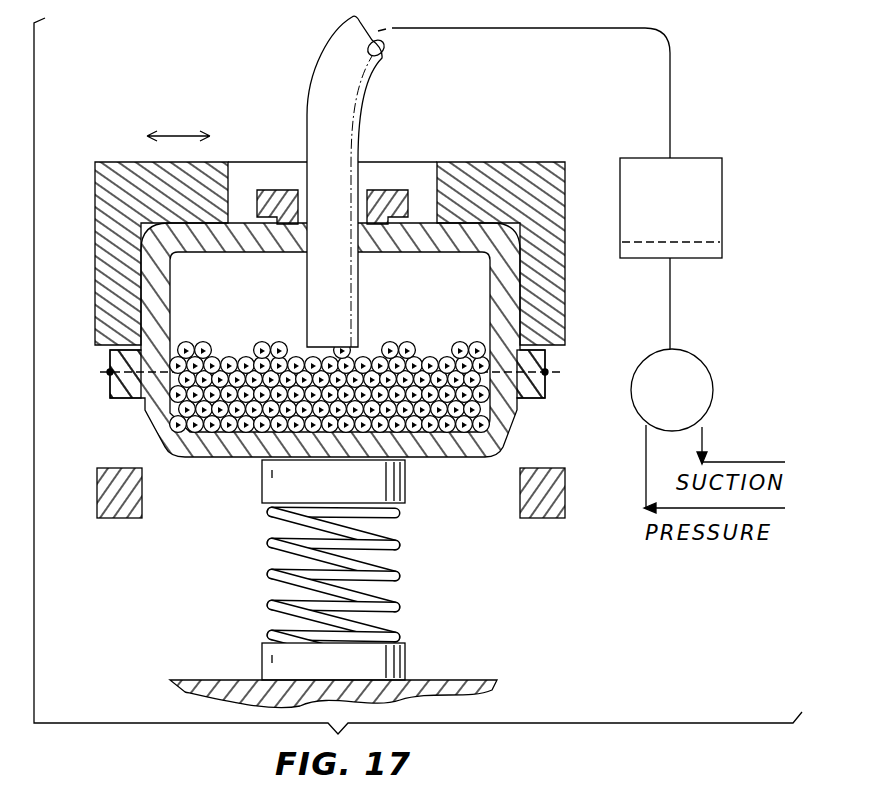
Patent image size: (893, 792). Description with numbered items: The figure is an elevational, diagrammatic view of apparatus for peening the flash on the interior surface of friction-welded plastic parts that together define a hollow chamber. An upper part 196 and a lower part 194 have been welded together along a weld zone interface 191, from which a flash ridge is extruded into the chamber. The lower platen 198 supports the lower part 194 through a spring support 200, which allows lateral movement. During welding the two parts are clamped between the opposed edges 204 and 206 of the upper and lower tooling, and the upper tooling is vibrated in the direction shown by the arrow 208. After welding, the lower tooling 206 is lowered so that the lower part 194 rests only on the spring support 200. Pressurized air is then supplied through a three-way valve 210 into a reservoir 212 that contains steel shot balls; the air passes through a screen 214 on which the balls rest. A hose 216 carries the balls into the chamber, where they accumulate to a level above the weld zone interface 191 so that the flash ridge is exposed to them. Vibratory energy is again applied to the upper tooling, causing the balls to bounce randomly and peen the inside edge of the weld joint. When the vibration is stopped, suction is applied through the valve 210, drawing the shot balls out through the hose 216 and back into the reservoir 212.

The weld zone interface 191 is at (541, 400).
The lower part 194 is at (505, 440).
The upper part 196 is at (463, 248).
The lower platen 198 is at (443, 680).
The spring support 200 is at (386, 602).
The opposed edge of upper tooling 204 is at (100, 350).
The lower tooling 206 is at (144, 488).
The arrow 208 is at (175, 134).
The 3-way valve 210 is at (705, 358).
The reservoir 212 is at (690, 158).
The screen 214 is at (690, 258).
The hose 216 is at (362, 112).